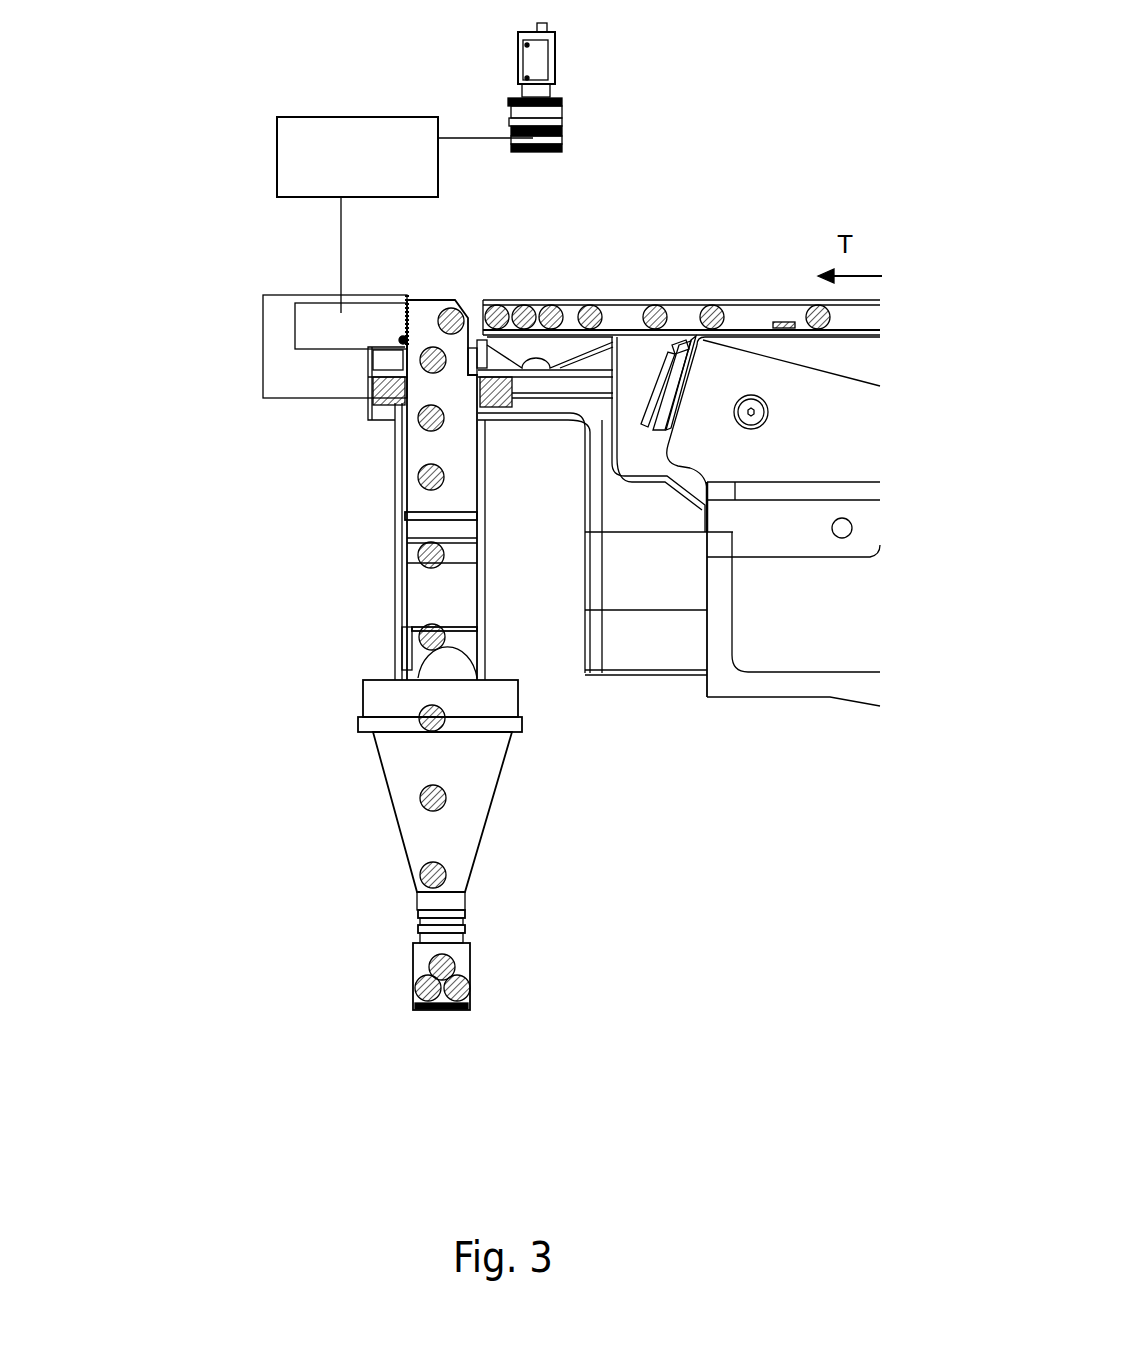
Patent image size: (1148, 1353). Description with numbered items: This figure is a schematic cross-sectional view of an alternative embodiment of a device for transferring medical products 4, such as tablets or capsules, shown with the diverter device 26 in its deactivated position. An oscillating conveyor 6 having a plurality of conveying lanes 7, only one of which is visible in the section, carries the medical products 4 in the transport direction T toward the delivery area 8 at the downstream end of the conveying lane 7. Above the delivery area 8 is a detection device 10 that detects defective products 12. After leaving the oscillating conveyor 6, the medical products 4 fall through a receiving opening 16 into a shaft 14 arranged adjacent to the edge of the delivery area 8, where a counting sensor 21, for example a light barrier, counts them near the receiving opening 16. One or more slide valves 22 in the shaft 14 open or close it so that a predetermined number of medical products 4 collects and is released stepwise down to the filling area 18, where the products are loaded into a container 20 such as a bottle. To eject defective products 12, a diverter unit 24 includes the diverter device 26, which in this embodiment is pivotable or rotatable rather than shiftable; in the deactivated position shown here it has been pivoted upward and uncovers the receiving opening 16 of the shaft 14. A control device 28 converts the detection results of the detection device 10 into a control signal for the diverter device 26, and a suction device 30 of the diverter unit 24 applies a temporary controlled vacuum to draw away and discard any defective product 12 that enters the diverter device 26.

The medical products 4 is at (612, 300).
The oscillating conveyor 6 is at (752, 303).
The conveying lane 7 is at (736, 322).
The delivery area 8 is at (483, 280).
The detection device 10 is at (540, 92).
The defective product 12 is at (784, 318).
The shaft 14 is at (457, 447).
The receiving opening 16 is at (462, 354).
The filling area 18 is at (474, 785).
The container 20 is at (462, 956).
The counting sensor 21 is at (396, 402).
The slide valve 22 is at (465, 517).
The diverter unit 24 is at (250, 256).
The diverter device 26 is at (340, 322).
The control device 28 is at (330, 170).
The suction device 30 is at (312, 342).